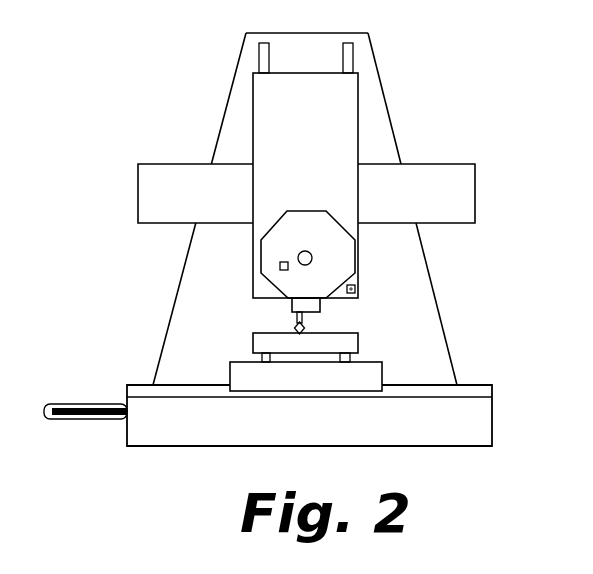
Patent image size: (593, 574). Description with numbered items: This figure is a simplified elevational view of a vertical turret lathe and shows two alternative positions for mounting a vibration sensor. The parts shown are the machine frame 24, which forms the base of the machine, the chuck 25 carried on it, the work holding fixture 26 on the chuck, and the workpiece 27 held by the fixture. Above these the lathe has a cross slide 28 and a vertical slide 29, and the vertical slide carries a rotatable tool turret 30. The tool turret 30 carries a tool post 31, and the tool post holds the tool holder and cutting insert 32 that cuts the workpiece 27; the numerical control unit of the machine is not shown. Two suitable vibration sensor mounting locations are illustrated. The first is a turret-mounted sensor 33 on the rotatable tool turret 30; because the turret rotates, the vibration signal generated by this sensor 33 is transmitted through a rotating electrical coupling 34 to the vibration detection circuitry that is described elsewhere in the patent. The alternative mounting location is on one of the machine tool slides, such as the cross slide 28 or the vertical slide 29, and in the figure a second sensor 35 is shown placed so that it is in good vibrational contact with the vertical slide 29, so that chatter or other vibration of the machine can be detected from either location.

The machine frame 24 is at (487, 425).
The chuck 25 is at (382, 372).
The work holding fixture 26 is at (262, 357).
The workpiece 27 is at (358, 343).
The cross slide 28 is at (470, 190).
The vertical slide 29 is at (359, 122).
The rotatable tool turret 30 is at (305, 211).
The tool post 31 is at (320, 305).
The tool holder and cutting insert 32 is at (297, 318).
The turret-mounted sensor 33 is at (283, 261).
The rotating electrical coupling 34 is at (305, 251).
The second sensor 35 is at (355, 284).